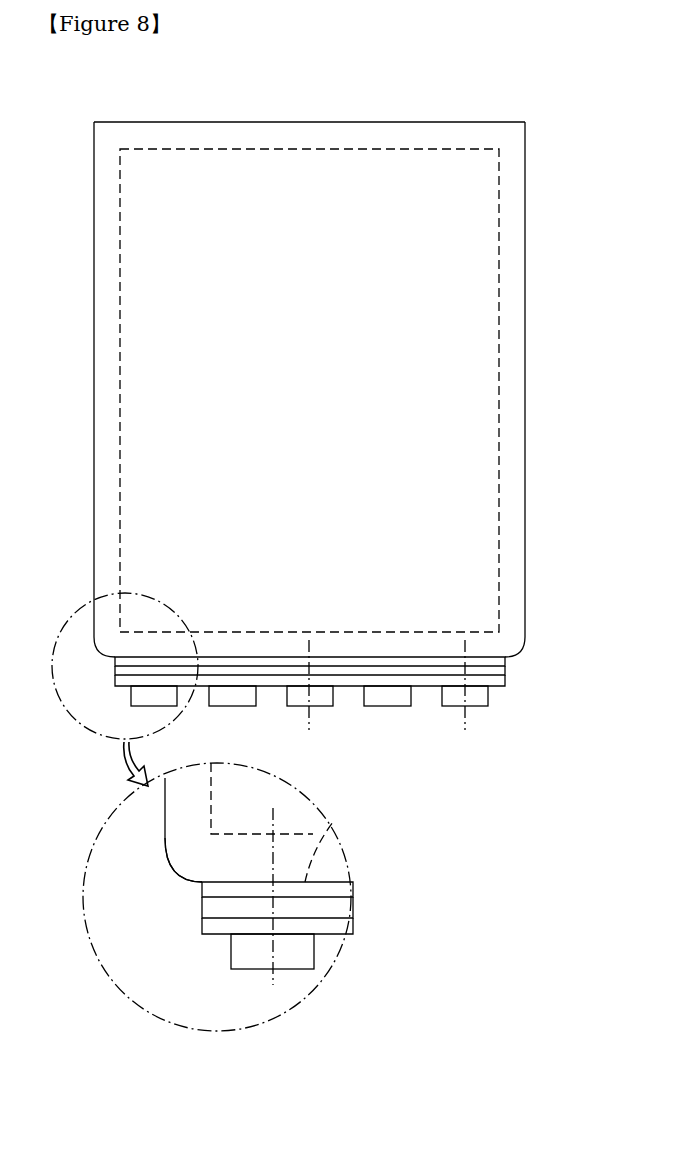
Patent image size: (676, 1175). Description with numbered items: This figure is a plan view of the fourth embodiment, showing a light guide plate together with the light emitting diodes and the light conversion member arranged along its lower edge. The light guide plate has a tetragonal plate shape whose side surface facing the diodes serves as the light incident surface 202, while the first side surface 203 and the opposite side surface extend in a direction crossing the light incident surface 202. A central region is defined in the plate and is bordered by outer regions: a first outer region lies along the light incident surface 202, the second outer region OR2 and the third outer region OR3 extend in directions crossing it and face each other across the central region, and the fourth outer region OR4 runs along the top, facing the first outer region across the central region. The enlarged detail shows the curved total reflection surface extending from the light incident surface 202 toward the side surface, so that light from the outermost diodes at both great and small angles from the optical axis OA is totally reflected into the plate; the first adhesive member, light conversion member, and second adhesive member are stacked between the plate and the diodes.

The fourth outer region OR4 is at (313, 130).
The first side surface 203 is at (525, 357).
The third outer region OR3 is at (102, 500).
The second outer region OR2 is at (518, 501).
The optical axis OA is at (389, 697).
The light incident surface 202 is at (333, 822).